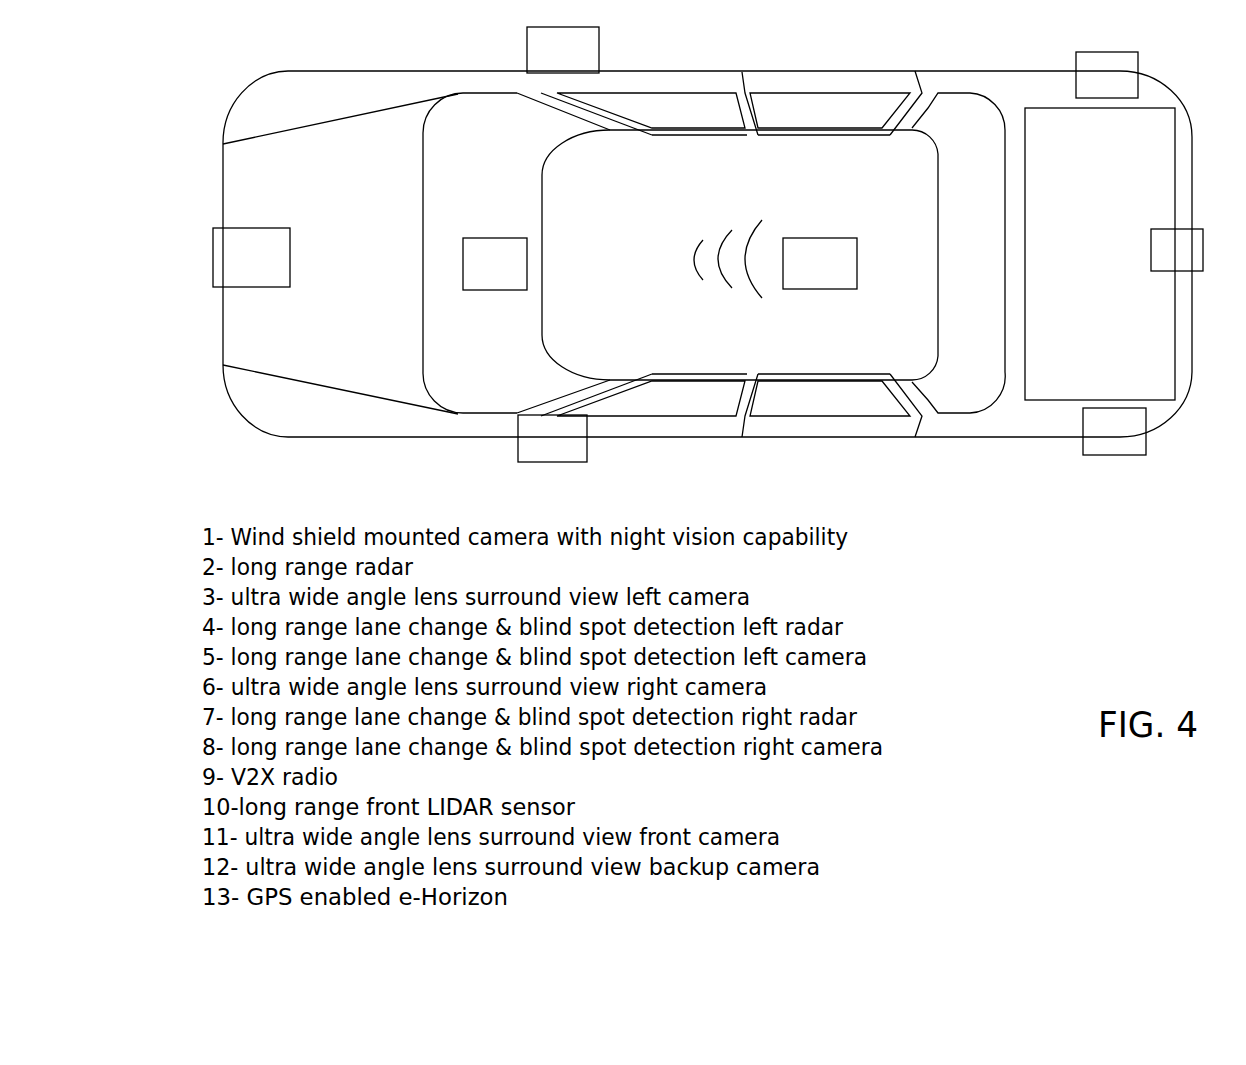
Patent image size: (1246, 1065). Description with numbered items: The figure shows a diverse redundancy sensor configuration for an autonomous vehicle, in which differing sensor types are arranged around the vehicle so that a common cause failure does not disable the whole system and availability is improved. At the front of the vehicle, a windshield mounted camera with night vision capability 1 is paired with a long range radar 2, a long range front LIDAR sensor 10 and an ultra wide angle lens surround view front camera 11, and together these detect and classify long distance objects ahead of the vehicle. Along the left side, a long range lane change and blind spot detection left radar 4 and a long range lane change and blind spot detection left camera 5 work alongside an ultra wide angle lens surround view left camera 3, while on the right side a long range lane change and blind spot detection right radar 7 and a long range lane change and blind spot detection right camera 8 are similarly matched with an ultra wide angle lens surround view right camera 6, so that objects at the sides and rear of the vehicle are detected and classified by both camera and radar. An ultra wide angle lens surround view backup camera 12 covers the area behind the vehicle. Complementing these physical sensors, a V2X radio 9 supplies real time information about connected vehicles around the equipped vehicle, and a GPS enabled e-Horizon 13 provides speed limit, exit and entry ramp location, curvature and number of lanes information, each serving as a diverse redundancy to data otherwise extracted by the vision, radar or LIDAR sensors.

The windshield mounted camera with night vision capability 1 is at (495, 264).
The long range radar 2 is at (251, 257).
The ultra wide angle lens surround view left camera 3 is at (585, 418).
The long range lane change and blind spot detection left radar 4 is at (542, 414).
The long range lane change and blind spot detection left camera 5 is at (1114, 431).
The ultra wide angle lens surround view right camera 6 is at (589, 81).
The long range lane change and blind spot detection right radar 7 is at (541, 93).
The long range lane change and blind spot detection right camera 8 is at (1107, 75).
The V2X radio 9 is at (775, 259).
The long range front LIDAR sensor 10 is at (251, 257).
The ultra wide angle lens surround view front camera 11 is at (251, 257).
The ultra wide angle lens surround view backup camera 12 is at (1177, 250).
The GPS enabled e-Horizon 13 is at (775, 259).